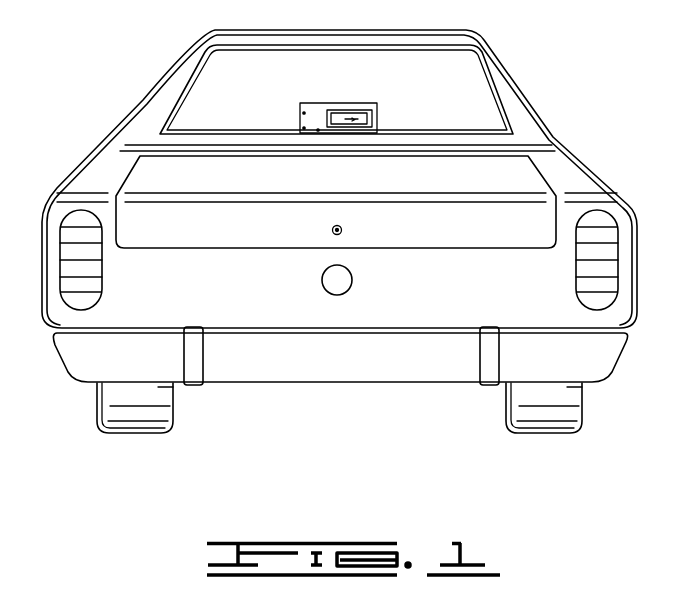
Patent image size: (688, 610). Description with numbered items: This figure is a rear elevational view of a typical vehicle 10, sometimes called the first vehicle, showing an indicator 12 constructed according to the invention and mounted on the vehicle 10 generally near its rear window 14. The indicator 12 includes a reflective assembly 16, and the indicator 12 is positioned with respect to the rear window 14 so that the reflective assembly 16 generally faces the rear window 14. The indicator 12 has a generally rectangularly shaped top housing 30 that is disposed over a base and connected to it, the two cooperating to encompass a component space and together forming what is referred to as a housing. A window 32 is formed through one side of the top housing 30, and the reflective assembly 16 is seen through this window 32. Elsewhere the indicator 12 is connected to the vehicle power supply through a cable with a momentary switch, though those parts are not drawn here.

The vehicle 10 is at (529, 82).
The rear window 14 is at (472, 64).
The top housing 30 is at (300, 107).
The indicator 12 is at (378, 105).
The window 32 is at (337, 112).
The reflective assembly 16 is at (364, 120).